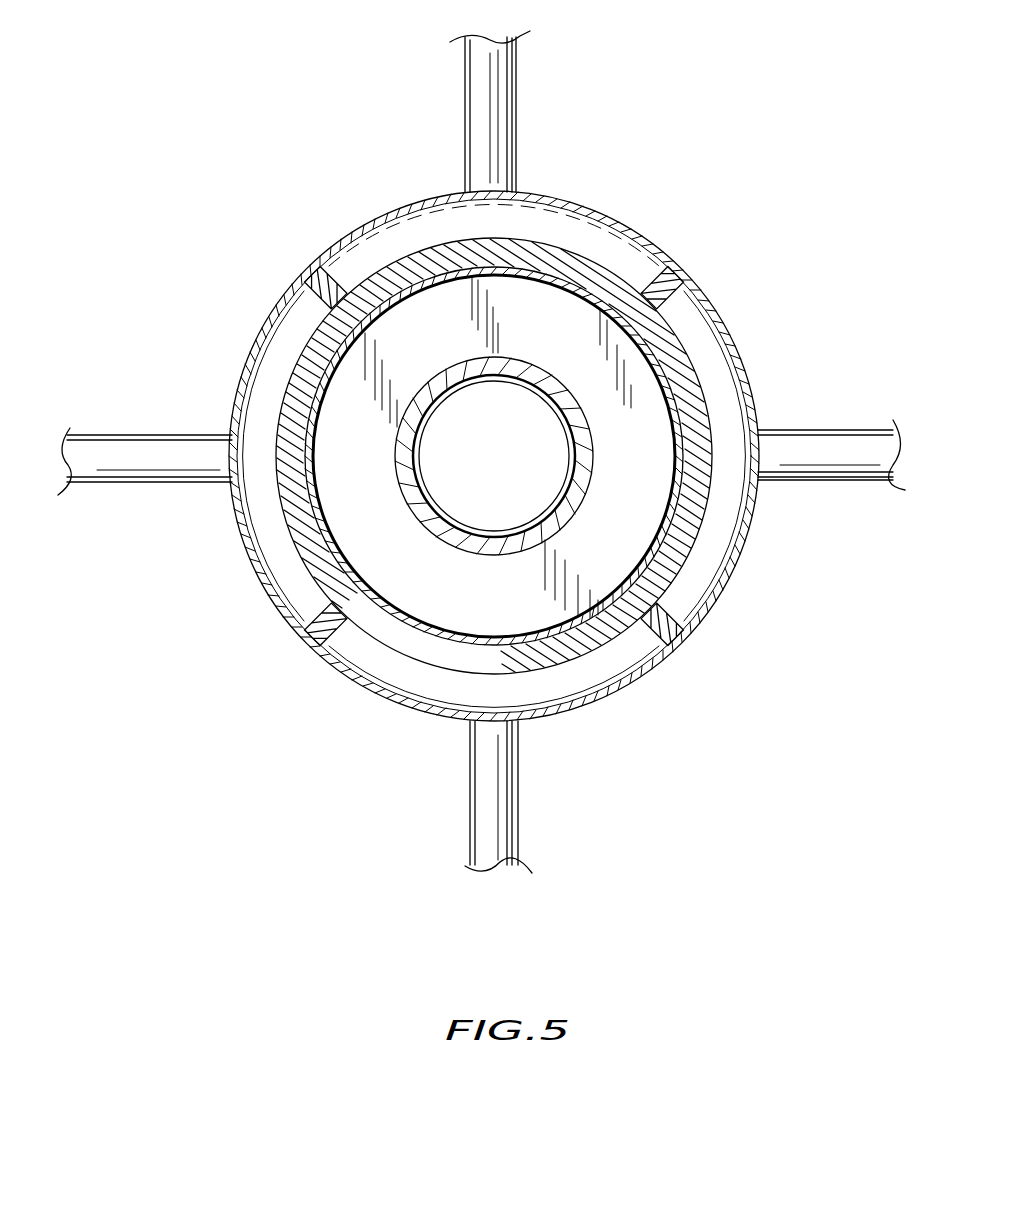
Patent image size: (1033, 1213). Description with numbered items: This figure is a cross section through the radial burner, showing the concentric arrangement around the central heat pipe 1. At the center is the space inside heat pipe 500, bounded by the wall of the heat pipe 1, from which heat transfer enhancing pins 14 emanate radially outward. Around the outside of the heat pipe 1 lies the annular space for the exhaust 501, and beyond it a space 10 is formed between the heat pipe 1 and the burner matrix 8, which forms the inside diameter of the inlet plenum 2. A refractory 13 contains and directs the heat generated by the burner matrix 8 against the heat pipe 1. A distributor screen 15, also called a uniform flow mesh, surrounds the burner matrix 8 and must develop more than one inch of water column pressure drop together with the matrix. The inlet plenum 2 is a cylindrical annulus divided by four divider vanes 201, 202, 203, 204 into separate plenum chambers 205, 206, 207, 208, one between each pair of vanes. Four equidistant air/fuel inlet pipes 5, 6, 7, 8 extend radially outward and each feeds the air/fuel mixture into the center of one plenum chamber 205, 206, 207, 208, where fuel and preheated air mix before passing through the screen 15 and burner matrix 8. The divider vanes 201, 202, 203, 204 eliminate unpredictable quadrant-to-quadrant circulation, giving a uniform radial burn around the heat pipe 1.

The heat pipe 1 is at (566, 418).
The inlet plenum 2 is at (765, 368).
The air/fuel inlet pipe 5 is at (495, 778).
The air/fuel inlet pipe 6 is at (815, 462).
The air/fuel inlet pipe 7 is at (503, 96).
The burner matrix 8 is at (133, 450).
The space 10 is at (510, 292).
The refractory 13 is at (441, 339).
The heat transfer enhancing pins 14 is at (594, 449).
The distributor screen 15 is at (420, 252).
The divider vane 201 is at (330, 635).
The divider vane 202 is at (660, 630).
The divider vane 203 is at (660, 295).
The divider vane 204 is at (295, 305).
The plenum chamber 205 is at (427, 688).
The plenum chamber 206 is at (700, 578).
The plenum chamber 207 is at (630, 258).
The plenum chamber 208 is at (275, 540).
The space inside heat pipe 500 is at (472, 474).
The annular space for the exhaust 501 is at (393, 453).